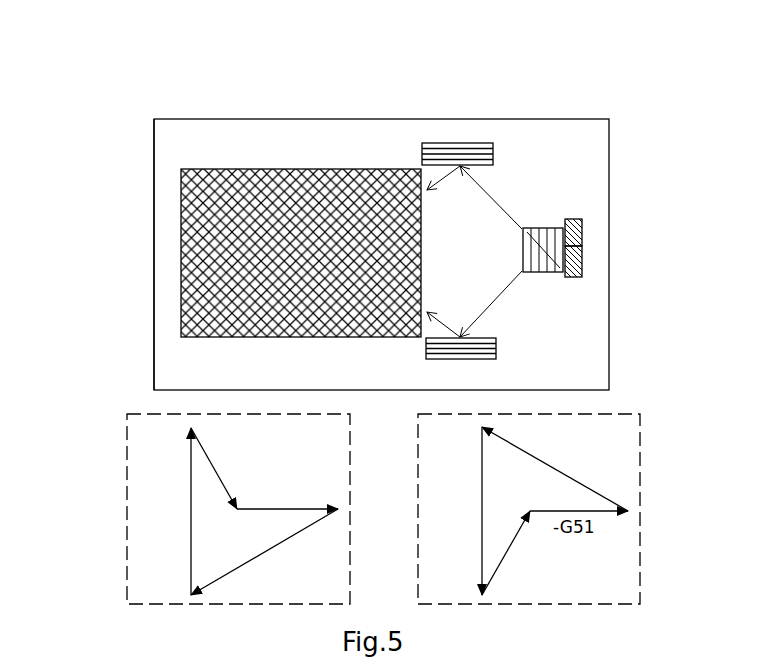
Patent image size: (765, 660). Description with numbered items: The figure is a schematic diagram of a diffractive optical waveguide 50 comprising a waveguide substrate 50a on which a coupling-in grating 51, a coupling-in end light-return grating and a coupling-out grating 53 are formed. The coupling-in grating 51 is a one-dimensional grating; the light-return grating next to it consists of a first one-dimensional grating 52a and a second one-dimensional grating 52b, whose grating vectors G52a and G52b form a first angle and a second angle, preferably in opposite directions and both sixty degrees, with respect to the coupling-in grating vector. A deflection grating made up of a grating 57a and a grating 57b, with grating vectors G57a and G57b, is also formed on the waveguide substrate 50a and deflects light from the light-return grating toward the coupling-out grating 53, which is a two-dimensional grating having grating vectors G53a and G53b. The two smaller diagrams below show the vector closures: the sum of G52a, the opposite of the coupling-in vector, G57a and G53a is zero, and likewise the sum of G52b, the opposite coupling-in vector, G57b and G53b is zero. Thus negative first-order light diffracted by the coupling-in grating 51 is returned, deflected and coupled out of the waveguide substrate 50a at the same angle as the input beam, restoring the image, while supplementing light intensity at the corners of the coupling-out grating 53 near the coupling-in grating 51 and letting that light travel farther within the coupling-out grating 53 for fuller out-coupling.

The diffractive optical waveguide 50 is at (349, 90).
The waveguide substrate 50a is at (153, 210).
The coupling-in grating 51 is at (540, 228).
The first one-dimensional grating 52a is at (582, 232).
The second one-dimensional grating 52b is at (582, 265).
The coupling-out grating 53 is at (181, 293).
The grating 57a is at (497, 347).
The grating 57b is at (457, 143).
The grating vector G57a is at (164, 511).
The grating vector G53a is at (228, 468).
The grating vector G52a is at (264, 552).
The grating vector G57b is at (455, 511).
The grating vector G53b is at (520, 553).
The grating vector G52b is at (555, 469).